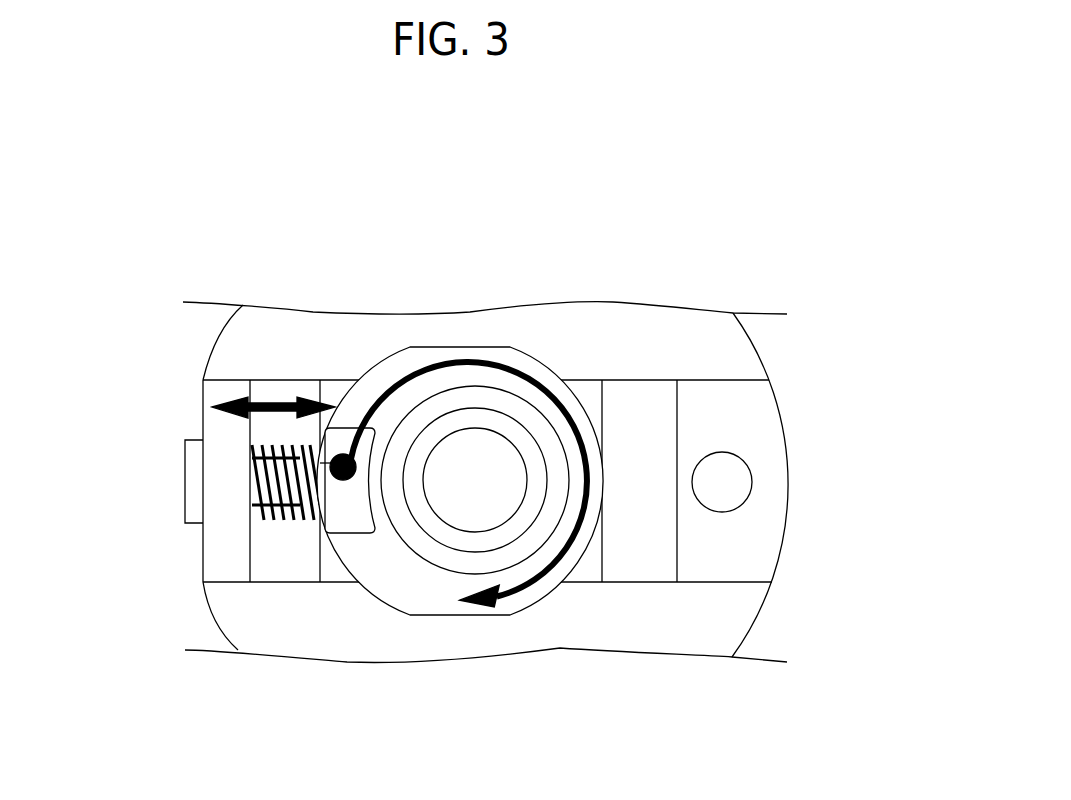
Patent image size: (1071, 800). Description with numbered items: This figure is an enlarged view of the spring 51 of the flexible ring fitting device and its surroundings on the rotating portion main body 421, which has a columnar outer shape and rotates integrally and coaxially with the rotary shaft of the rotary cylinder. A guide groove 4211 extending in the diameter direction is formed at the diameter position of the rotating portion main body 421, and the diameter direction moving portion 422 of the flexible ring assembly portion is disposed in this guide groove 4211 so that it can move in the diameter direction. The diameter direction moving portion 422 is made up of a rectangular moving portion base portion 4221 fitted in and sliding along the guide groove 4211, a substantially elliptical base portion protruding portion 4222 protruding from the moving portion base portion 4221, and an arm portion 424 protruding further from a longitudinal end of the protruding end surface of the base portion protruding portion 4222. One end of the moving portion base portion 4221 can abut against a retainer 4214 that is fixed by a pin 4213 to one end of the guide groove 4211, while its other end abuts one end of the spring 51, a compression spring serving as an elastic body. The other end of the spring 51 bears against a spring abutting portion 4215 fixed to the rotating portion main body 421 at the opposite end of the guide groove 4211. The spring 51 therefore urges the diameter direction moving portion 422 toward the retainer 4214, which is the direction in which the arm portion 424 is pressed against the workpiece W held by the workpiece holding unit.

The rotating portion main body 421 is at (737, 605).
The guide groove 4211 is at (655, 383).
The pin 4213 is at (725, 473).
The retainer 4214 is at (765, 497).
The spring abutting portion 4215 is at (215, 430).
The moving portion base portion 4221 is at (633, 407).
The base portion protruding portion 4222 is at (435, 353).
The diameter direction moving portion 422 is at (575, 597).
The arm portion 424 is at (343, 455).
The spring 51 is at (270, 520).
The workpiece W is at (503, 397).